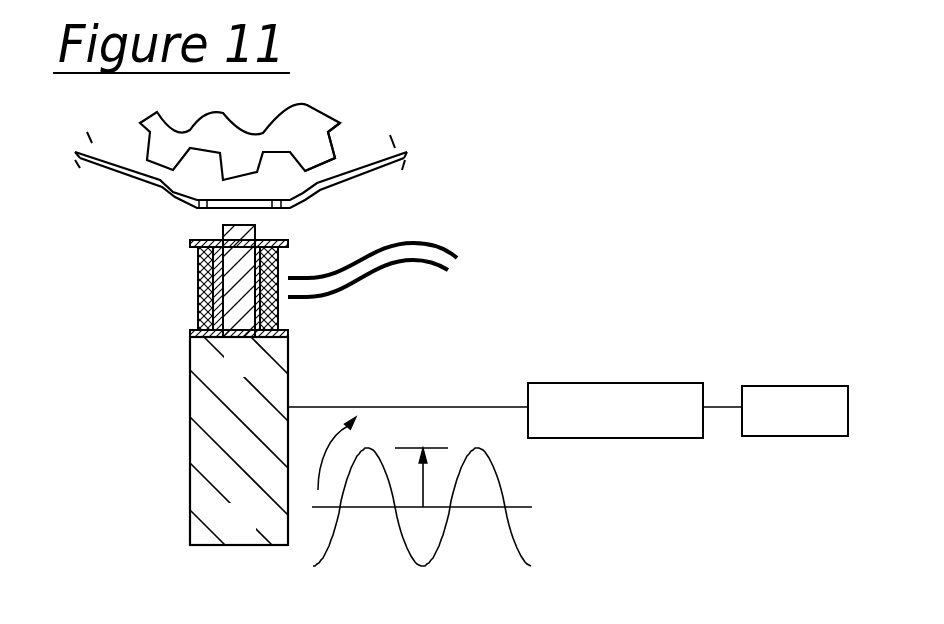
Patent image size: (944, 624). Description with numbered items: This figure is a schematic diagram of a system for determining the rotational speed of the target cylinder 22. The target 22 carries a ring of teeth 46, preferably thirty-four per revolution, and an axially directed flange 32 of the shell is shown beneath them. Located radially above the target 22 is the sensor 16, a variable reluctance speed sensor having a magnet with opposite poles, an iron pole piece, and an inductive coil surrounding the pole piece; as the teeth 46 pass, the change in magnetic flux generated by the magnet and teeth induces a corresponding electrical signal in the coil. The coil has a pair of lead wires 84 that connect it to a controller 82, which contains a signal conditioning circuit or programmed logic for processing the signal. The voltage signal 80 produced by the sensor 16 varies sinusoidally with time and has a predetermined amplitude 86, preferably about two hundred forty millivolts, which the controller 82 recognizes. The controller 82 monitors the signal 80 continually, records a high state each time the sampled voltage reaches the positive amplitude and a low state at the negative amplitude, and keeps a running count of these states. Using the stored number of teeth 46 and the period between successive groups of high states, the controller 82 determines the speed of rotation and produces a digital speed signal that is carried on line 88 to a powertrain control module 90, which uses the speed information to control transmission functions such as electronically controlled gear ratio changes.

The target cylinder 22 is at (163, 122).
The teeth 46 is at (322, 150).
The axially directed flange 32 is at (127, 178).
The sensor 16 is at (198, 446).
The lead wires 84 is at (533, 185).
The controller 82 is at (617, 382).
The line 88 is at (720, 407).
The powertrain control module 90 is at (793, 386).
The voltage signal 80 is at (403, 553).
The amplitude 86 is at (423, 490).